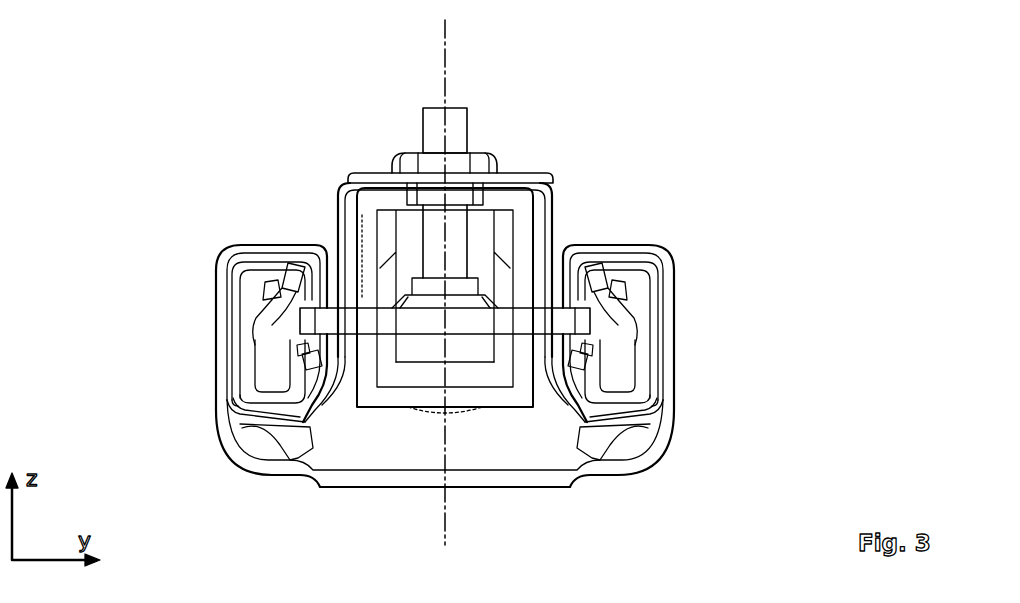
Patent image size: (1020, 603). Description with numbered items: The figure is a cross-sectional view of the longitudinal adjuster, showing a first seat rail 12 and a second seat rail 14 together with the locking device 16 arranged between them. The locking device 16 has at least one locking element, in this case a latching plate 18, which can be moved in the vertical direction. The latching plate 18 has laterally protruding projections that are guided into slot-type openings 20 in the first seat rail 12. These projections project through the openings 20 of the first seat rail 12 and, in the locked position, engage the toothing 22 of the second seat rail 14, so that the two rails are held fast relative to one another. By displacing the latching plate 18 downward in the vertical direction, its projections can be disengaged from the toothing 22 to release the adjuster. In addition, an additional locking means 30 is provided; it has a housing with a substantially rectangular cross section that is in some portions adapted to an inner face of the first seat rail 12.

The first seat rail 12 is at (514, 178).
The second seat rail 14 is at (230, 260).
The locking device 16 is at (412, 146).
The latching plate 18 is at (548, 196).
The slot-type openings 20 is at (565, 393).
The toothing 22 is at (480, 322).
The additional locking means 30 is at (378, 219).